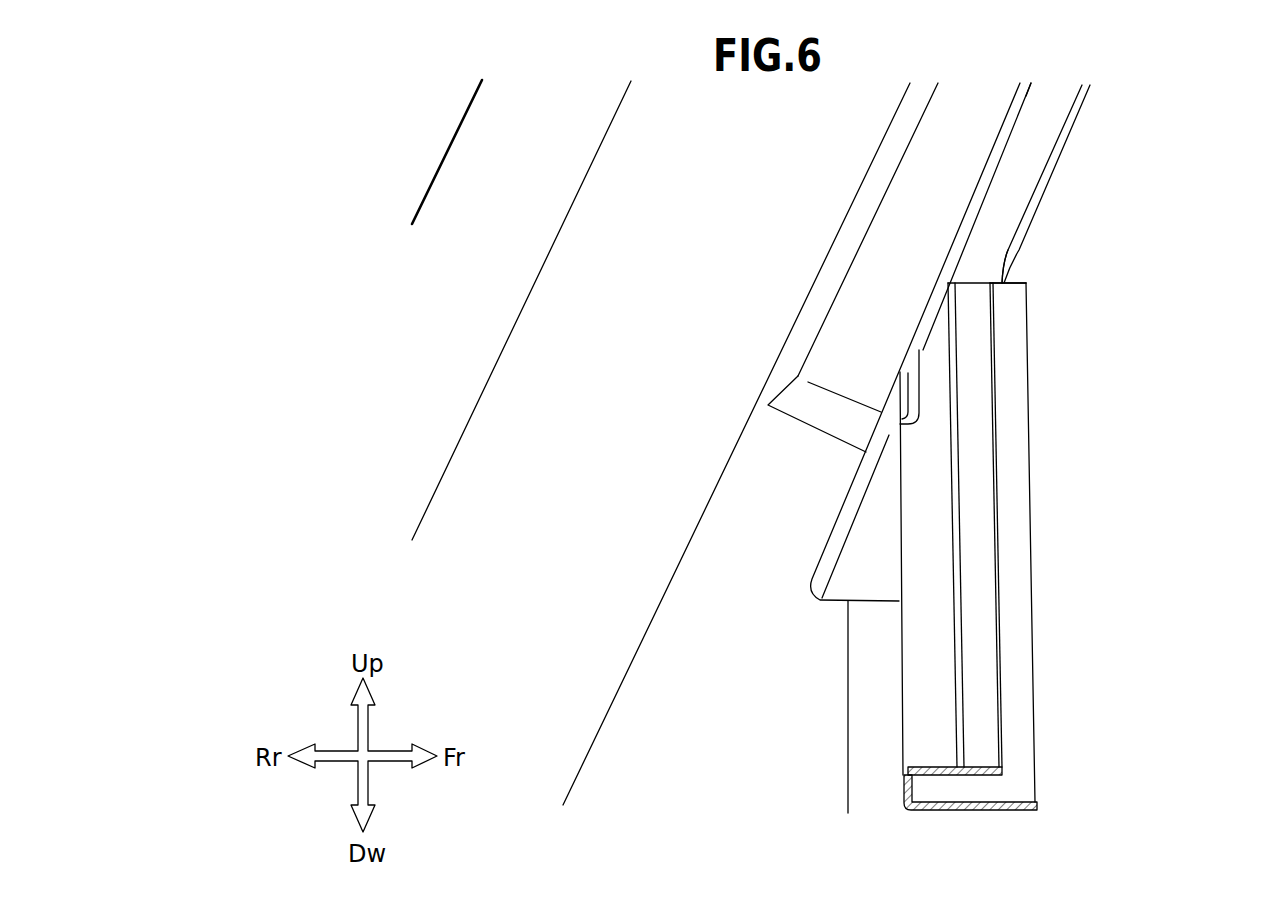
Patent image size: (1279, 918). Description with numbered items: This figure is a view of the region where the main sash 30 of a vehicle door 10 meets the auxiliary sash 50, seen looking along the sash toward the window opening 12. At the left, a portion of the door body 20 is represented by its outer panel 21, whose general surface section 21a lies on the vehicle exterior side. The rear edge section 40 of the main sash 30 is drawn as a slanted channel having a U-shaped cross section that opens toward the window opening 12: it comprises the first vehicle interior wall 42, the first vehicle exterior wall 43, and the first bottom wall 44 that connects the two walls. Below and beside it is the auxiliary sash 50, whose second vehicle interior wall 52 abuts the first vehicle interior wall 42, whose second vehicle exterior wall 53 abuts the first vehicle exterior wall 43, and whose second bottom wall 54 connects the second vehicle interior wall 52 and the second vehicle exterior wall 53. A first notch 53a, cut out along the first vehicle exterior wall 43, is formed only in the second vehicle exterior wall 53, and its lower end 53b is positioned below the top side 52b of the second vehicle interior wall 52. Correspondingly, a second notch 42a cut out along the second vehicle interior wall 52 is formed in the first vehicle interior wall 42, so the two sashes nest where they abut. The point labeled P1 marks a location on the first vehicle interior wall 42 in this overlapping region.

The vehicle door 10 is at (363, 147).
The window opening 12 is at (1227, 540).
The door body 20 is at (363, 147).
The outer panel 21 is at (365, 125).
The general surface section 21a is at (509, 490).
The main sash 30 is at (797, 444).
The rear edge section 40 is at (977, 183).
The first vehicle interior wall 42 is at (1038, 198).
The second notch 42a is at (1003, 284).
The first vehicle exterior wall 43 is at (1025, 102).
The first bottom wall 44 is at (1019, 153).
The auxiliary sash 50 is at (921, 566).
The second vehicle interior wall 52 is at (1029, 566).
The top side of second vehicle interior wall 52b is at (1000, 285).
The second vehicle exterior wall 53 is at (905, 529).
The first notch 53a is at (903, 372).
The lower end of first notch 53b is at (897, 405).
The second bottom wall 54 is at (912, 790).
The point P1 is at (935, 303).